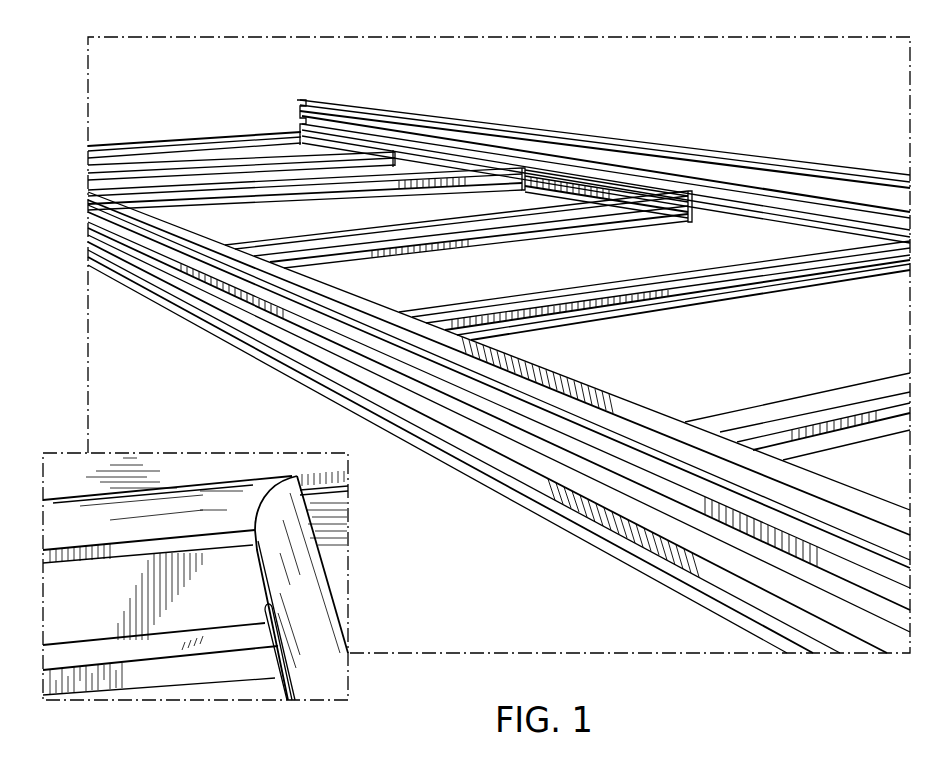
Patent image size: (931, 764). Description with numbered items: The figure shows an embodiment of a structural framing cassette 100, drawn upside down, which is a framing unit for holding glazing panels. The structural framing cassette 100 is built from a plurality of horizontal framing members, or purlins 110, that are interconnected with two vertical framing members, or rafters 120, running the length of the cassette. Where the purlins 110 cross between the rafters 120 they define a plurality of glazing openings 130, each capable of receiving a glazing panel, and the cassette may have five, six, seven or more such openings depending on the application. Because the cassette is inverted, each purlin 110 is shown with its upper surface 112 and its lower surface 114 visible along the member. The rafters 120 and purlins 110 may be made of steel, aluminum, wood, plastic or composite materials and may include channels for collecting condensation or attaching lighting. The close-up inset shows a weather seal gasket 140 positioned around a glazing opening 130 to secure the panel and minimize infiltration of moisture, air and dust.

The structural framing cassette 100 is at (134, 24).
The purlins 110 is at (472, 230).
The upper surface 112 is at (692, 302).
The lower surface 114 is at (653, 193).
The rafters 120 is at (430, 130).
The glazing openings 130 is at (558, 268).
The weather seal gasket 140 is at (315, 673).